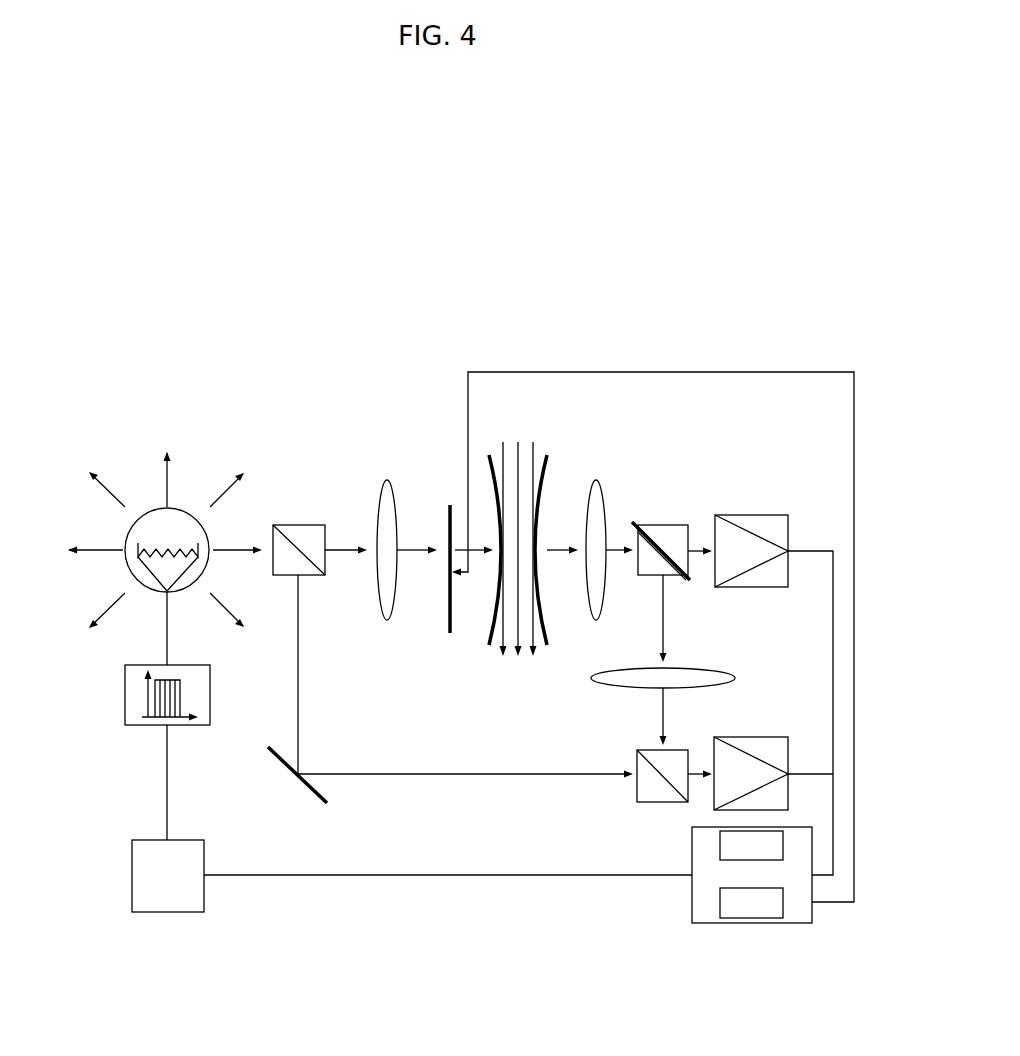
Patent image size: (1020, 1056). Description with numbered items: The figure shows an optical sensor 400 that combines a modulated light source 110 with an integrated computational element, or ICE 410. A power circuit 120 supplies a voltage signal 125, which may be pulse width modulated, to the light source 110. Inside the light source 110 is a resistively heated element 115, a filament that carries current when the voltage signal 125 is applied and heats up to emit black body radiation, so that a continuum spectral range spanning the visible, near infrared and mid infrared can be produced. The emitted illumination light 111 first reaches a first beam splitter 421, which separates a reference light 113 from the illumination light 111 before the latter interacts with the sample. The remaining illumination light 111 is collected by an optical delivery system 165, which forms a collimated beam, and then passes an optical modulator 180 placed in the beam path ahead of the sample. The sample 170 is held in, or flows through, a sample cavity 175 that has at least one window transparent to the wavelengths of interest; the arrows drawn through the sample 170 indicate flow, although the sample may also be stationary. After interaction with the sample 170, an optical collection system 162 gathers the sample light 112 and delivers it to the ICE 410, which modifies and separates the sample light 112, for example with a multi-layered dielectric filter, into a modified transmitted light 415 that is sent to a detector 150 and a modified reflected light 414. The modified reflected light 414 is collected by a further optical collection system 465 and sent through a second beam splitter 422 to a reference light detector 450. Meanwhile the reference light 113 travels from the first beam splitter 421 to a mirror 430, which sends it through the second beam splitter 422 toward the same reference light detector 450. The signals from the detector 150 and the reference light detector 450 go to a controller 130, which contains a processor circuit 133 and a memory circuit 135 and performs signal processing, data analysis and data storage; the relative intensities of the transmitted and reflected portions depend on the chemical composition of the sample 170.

The optical sensor 400 is at (183, 287).
The light source 110 is at (130, 532).
The resistively heated element 115 is at (188, 547).
The illumination light 111 is at (222, 548).
The first beam splitter 421 is at (289, 524).
The optical delivery system 165 is at (388, 482).
The optical modulator 180 is at (448, 634).
The sample cavity 175 is at (492, 632).
The sample 170 is at (519, 452).
The sample light 112 is at (558, 548).
The optical collection system 162 is at (597, 620).
The integrated computational element 410 is at (668, 523).
The modified transmitted light 415 is at (697, 540).
The detector 150 is at (758, 562).
The modified reflected light 414 is at (663, 590).
The optical collection system 465 is at (735, 677).
The second beam splitter 422 is at (640, 803).
The reference light detector 450 is at (758, 786).
The reference light 113 is at (298, 678).
The mirror 430 is at (311, 792).
The voltage signal 125 is at (125, 708).
The power circuit 120 is at (187, 888).
The controller 130 is at (773, 884).
The processor circuit 133 is at (773, 858).
The memory circuit 135 is at (773, 917).